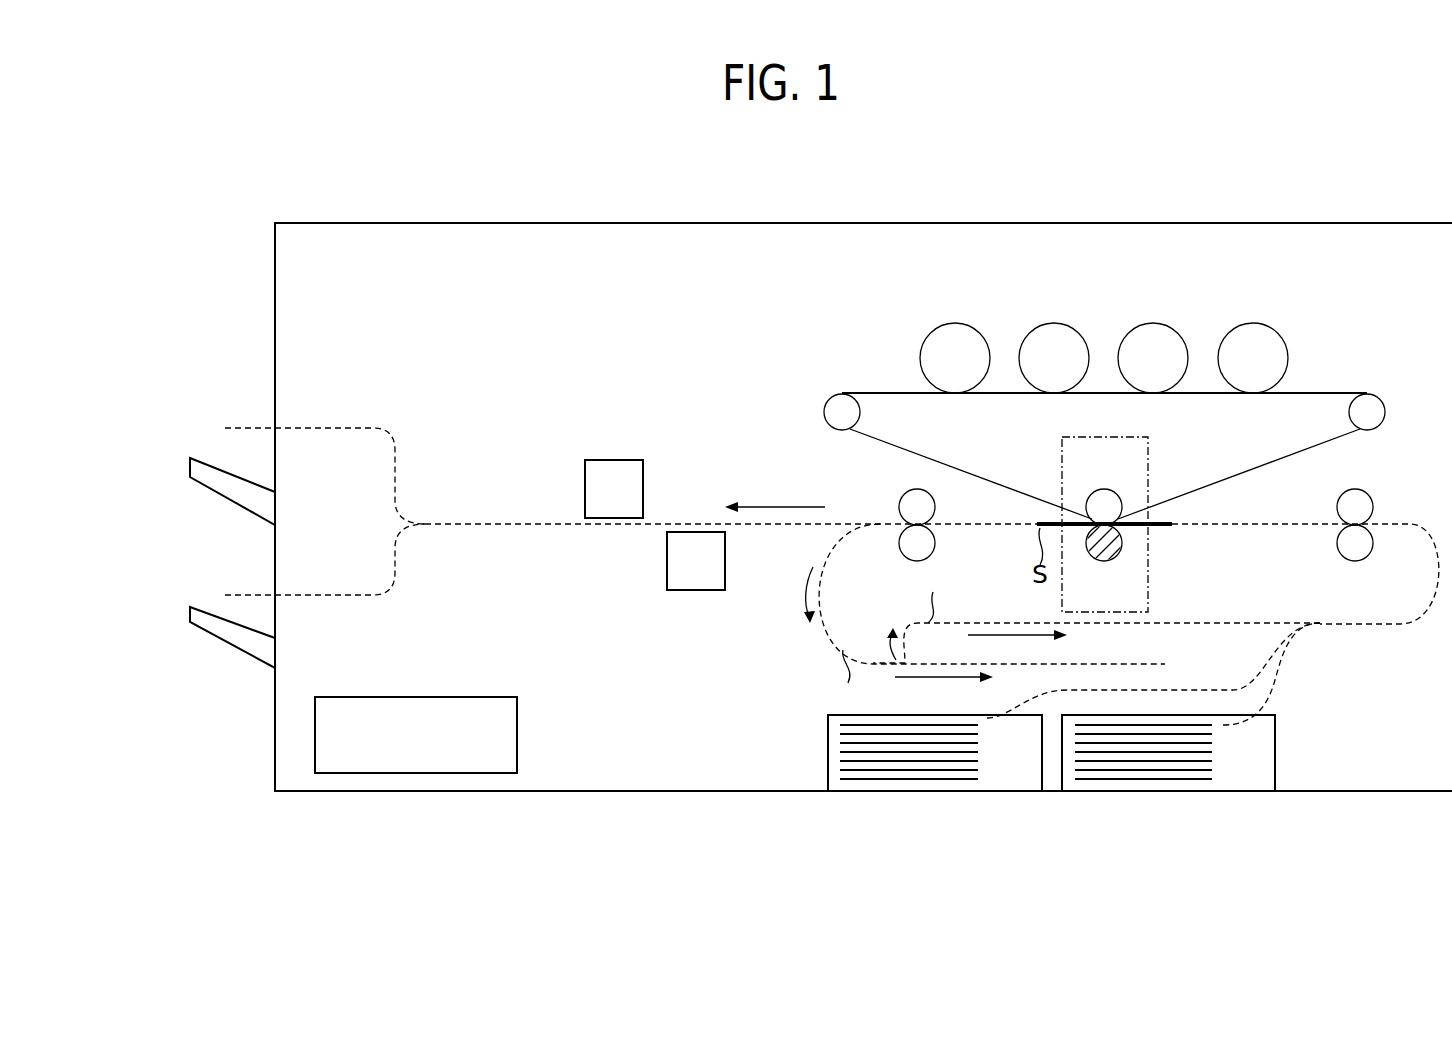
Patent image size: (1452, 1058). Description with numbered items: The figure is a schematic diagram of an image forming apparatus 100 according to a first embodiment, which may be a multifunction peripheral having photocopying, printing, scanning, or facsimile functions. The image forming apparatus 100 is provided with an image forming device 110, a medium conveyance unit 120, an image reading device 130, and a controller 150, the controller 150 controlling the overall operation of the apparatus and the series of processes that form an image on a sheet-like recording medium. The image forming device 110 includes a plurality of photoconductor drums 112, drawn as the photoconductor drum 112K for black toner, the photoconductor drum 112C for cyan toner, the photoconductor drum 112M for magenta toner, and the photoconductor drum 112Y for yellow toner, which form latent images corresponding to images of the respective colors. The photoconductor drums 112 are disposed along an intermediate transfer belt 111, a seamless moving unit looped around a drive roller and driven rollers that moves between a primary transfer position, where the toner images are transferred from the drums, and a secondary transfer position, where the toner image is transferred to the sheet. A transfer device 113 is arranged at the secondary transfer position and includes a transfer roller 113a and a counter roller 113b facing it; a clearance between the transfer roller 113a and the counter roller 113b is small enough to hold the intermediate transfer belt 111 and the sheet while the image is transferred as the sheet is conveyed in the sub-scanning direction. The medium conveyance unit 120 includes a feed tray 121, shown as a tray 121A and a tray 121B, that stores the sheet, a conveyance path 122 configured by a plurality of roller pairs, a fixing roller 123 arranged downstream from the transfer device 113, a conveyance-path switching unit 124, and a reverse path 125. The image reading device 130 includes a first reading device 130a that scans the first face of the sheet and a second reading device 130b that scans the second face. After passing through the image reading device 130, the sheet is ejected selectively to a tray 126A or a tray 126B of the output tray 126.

The image forming apparatus 100 is at (1378, 223).
The image forming device 110 is at (1112, 423).
The intermediate transfer belt 111 is at (1278, 460).
The photoconductor drums 112 is at (1090, 312).
The photoconductor drum 112K is at (925, 337).
The photoconductor drum 112C is at (1025, 337).
The photoconductor drum 112M is at (1123, 337).
The photoconductor drum 112Y is at (1242, 335).
The transfer device 113 is at (1141, 525).
The transfer roller 113a is at (1104, 489).
The counter roller 113b is at (1104, 561).
The medium conveyance unit 120 is at (1380, 642).
The feed tray 121 is at (1054, 806).
The feed tray 121A is at (1168, 784).
The feed tray 121B is at (1005, 777).
The conveyance path 122 is at (1410, 524).
The fixing roller 123 is at (935, 543).
The conveyance-path switching unit 124 is at (845, 682).
The reverse path 125 is at (929, 594).
The output tray 126 is at (262, 532).
The tray 126A is at (190, 458).
The tray 126B is at (293, 596).
The image reading device 130 is at (655, 511).
The first reading device 130a is at (697, 590).
The second reading device 130b is at (612, 460).
The controller 150 is at (415, 697).